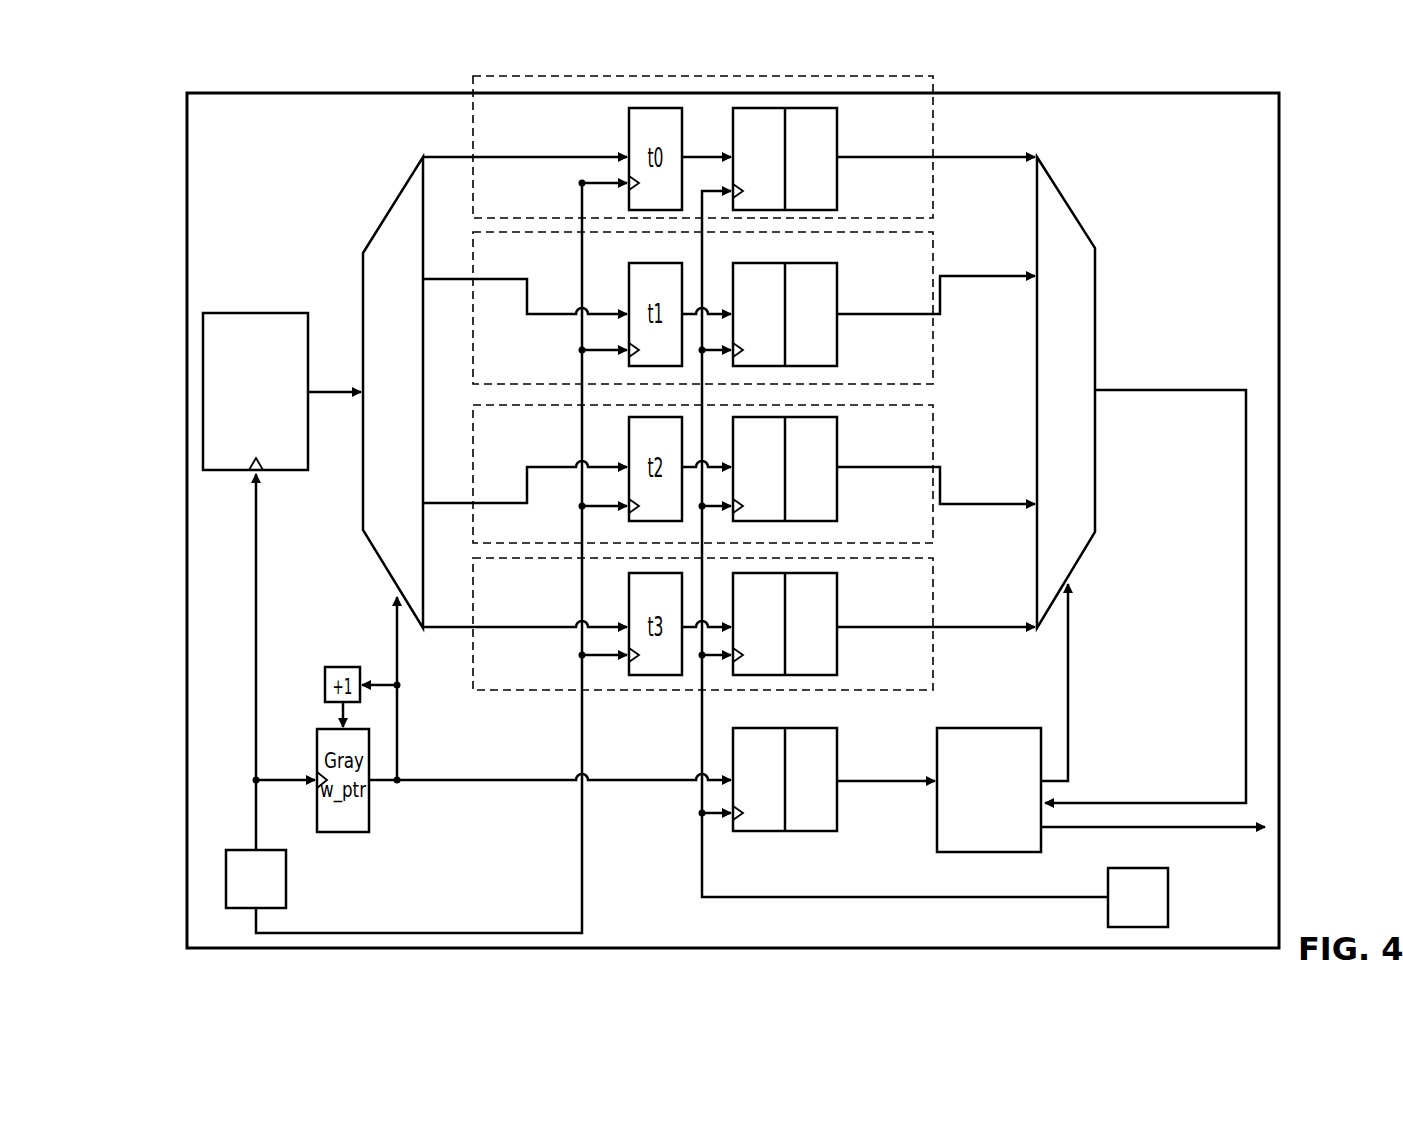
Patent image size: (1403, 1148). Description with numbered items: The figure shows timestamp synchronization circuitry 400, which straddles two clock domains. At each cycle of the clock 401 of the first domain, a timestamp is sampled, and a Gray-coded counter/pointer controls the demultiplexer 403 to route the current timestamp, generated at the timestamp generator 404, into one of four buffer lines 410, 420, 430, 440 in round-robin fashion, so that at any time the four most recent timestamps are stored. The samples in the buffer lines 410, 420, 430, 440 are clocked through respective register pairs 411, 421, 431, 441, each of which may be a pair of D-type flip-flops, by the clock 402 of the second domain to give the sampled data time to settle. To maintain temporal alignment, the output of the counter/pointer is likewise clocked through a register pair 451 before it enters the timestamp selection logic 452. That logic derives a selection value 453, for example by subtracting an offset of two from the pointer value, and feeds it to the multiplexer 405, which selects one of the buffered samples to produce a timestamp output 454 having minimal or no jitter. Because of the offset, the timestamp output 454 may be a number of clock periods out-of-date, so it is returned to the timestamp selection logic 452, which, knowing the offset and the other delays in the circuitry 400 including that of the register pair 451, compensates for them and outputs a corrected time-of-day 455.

The timestamp synchronization circuitry 400 is at (1197, 93).
The clock 401 is at (286, 878).
The clock 402 is at (1143, 868).
The demultiplexer 403 is at (363, 253).
The timestamp generator 404 is at (281, 313).
The multiplexer 405 is at (1095, 440).
The buffer line 410 is at (855, 76).
The register pair 411 is at (840, 168).
The buffer line 420 is at (933, 328).
The register pair 421 is at (840, 333).
The buffer line 430 is at (933, 430).
The register pair 431 is at (840, 489).
The buffer line 440 is at (933, 615).
The register pair 441 is at (840, 643).
The register pair 451 is at (840, 741).
The timestamp selection logic 452 is at (1040, 705).
The selection value 453 is at (1068, 678).
The timestamp output 454 is at (1172, 390).
The corrected time-of-day 455 is at (1250, 828).